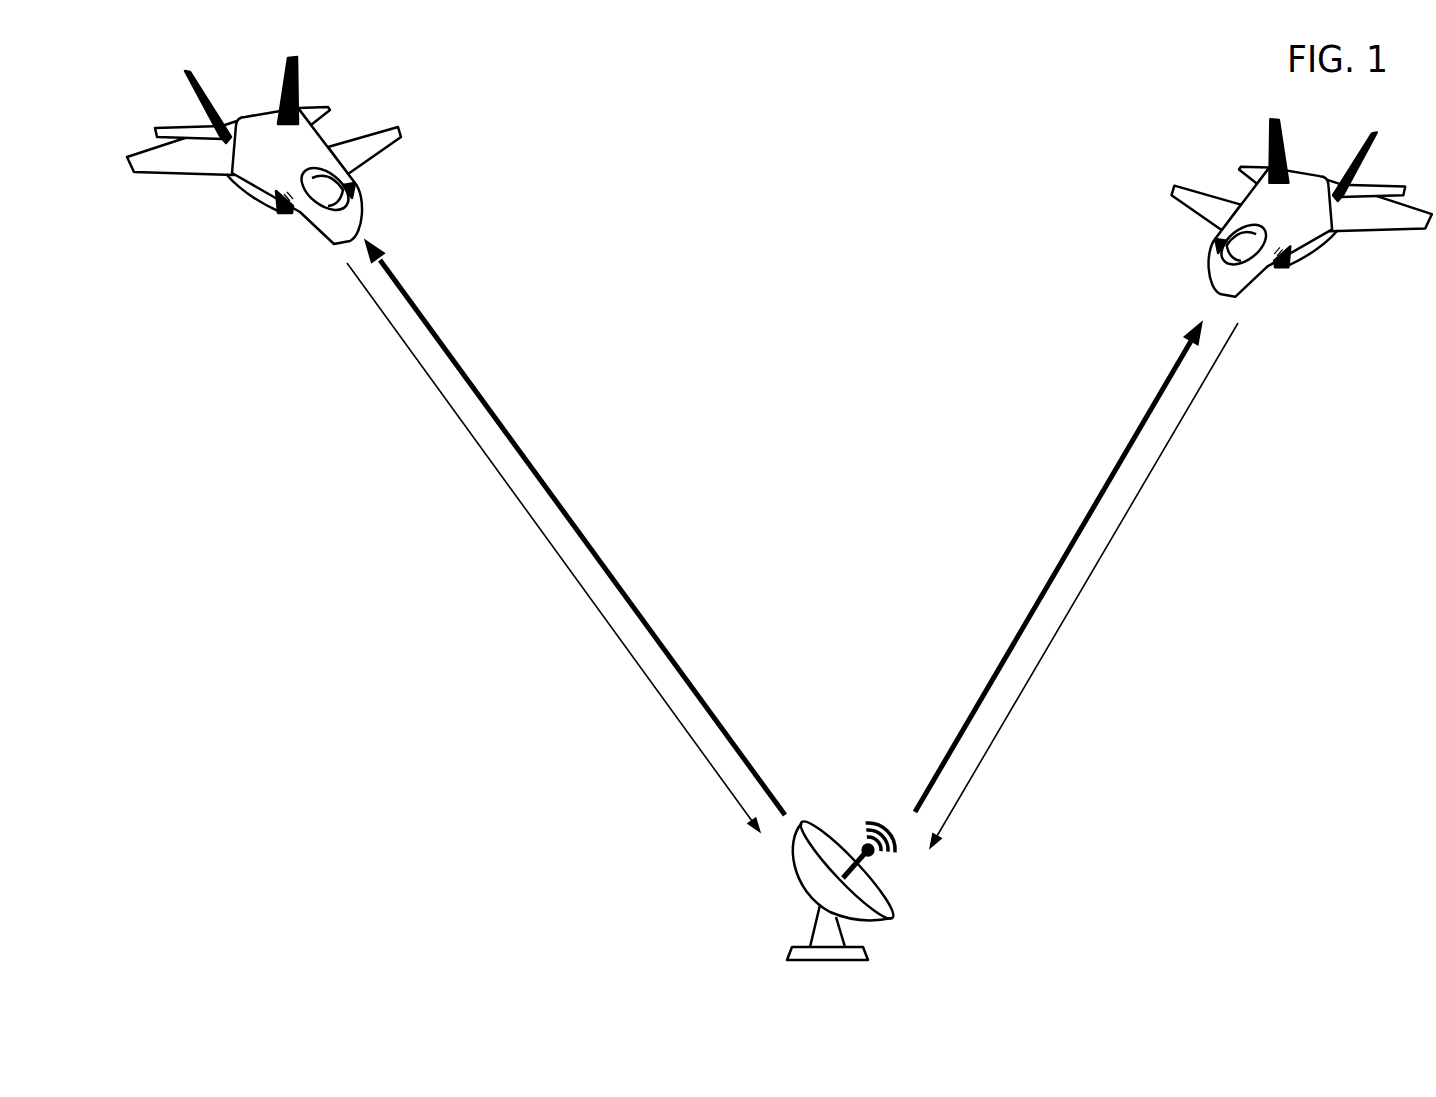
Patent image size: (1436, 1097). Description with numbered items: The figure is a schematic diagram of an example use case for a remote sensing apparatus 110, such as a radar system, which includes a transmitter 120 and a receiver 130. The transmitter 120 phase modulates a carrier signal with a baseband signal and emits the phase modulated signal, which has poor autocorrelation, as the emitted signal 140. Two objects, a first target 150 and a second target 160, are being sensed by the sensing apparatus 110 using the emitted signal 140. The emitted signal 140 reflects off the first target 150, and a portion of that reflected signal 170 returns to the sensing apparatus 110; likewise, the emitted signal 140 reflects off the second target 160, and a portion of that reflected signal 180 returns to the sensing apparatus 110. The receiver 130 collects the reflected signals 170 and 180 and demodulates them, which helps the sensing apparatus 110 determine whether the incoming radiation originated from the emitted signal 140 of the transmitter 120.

The remote sensing apparatus 110 is at (812, 887).
The transmitter 120 is at (978, 849).
The receiver 130 is at (868, 924).
The emitted signal 140 is at (957, 732).
The first target 150 is at (350, 168).
The second target 160 is at (1210, 238).
The reflected signal (from first target) 170 is at (587, 593).
The reflected signal (from second target) 180 is at (1075, 610).